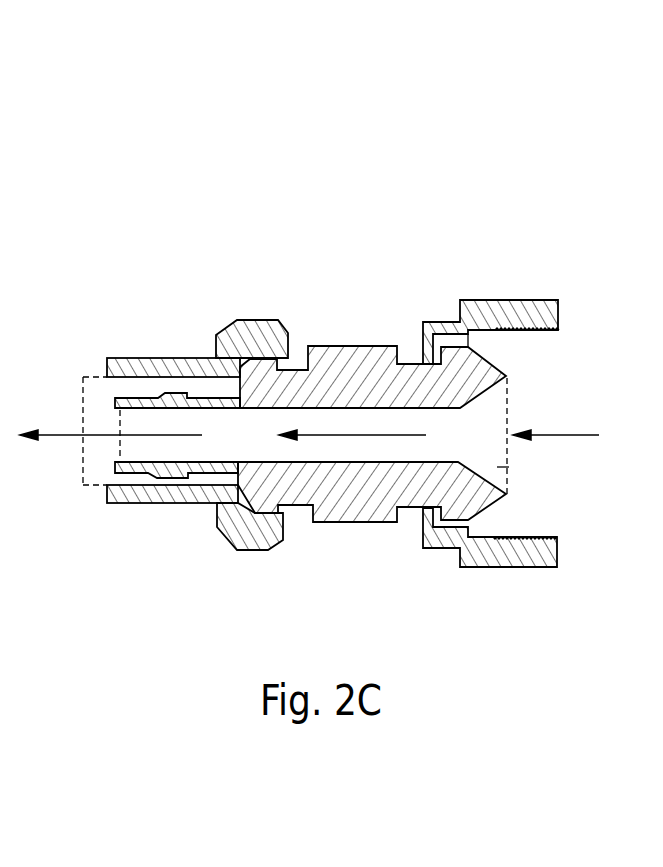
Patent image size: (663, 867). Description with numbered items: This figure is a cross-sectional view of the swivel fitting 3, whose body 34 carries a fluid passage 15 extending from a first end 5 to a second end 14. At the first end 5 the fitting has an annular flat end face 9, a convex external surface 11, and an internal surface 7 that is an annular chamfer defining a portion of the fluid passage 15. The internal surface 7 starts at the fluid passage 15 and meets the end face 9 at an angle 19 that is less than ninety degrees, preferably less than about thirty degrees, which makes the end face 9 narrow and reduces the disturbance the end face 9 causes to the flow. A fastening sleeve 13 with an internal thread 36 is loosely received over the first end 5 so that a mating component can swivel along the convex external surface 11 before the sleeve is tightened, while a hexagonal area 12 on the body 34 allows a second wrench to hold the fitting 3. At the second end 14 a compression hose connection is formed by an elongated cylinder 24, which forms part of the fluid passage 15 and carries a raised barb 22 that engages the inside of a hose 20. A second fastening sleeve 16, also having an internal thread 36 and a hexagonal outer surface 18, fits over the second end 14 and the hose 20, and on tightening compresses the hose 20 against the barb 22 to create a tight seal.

The swivel fitting 3 is at (316, 157).
The first end 5 is at (582, 215).
The internal surface 7 is at (487, 355).
The end face 9 is at (524, 373).
The external surface 11 is at (484, 351).
The area 12 is at (348, 358).
The fastening sleeve 13 is at (506, 333).
The second end 14 is at (292, 215).
The fluid passage 15 is at (145, 422).
The fastening sleeve 16 is at (185, 360).
The hexagonal outer surface 18 is at (260, 327).
The angle 19 is at (508, 467).
The hose 20 is at (87, 490).
The barb 22 is at (170, 472).
The elongated cylinder 24 is at (137, 478).
The body 34 is at (415, 377).
The internal thread 36 is at (252, 513).